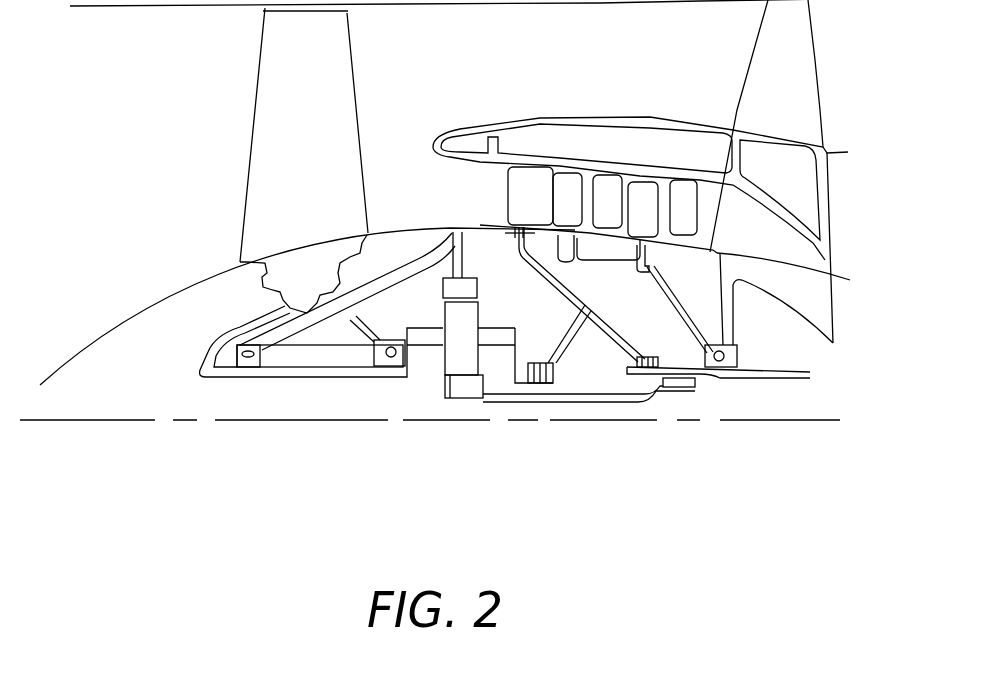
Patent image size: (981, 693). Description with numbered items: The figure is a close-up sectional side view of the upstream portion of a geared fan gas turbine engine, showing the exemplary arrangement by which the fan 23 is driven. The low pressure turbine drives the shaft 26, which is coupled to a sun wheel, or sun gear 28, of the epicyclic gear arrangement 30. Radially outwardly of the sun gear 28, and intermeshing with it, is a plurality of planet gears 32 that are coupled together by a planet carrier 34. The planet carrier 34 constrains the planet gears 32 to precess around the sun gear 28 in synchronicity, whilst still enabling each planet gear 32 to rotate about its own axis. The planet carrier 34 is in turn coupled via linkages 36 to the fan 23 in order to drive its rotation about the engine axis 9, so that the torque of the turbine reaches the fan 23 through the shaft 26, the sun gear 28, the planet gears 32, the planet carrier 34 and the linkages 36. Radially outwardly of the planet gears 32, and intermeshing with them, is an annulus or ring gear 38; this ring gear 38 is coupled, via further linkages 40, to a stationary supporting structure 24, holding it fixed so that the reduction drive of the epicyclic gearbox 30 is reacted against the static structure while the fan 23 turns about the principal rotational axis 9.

The principal rotational axis 9 is at (135, 420).
The propulsive fan 23 is at (280, 137).
The stationary supporting structure 24 is at (467, 187).
The shaft 26 is at (590, 400).
The sun gear 28 is at (463, 387).
The epicyclic gearbox 30 is at (430, 370).
The planet gears 32 is at (450, 360).
The planet carrier 34 is at (512, 357).
The linkages 36 is at (413, 363).
The ring gear 38 is at (467, 288).
The linkages 40 is at (463, 258).